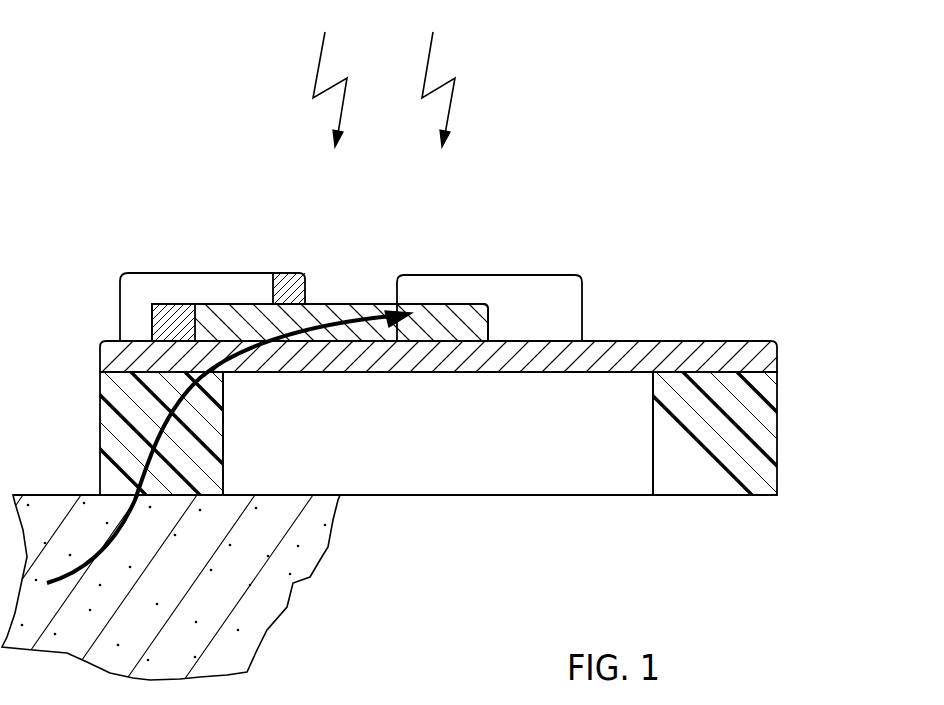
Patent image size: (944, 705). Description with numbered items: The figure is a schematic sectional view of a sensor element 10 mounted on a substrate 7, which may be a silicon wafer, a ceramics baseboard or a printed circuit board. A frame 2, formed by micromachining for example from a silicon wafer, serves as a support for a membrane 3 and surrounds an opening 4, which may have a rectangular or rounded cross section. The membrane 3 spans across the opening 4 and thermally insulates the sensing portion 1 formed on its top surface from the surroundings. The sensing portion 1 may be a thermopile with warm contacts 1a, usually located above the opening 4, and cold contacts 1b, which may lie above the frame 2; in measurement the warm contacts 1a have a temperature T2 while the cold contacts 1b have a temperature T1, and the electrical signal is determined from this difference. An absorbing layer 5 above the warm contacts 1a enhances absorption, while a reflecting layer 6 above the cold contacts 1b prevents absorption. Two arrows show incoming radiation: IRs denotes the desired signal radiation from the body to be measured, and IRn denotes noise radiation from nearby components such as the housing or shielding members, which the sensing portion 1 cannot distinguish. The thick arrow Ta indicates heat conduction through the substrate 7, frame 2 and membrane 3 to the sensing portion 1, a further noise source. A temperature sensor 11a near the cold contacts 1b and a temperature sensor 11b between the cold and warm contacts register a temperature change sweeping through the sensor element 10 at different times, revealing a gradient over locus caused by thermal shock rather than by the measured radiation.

The sensing portion 1 is at (357, 312).
The warm contacts 1a is at (458, 310).
The cold contacts 1b is at (204, 324).
The frame 2 is at (768, 426).
The membrane 3 is at (730, 352).
The opening 4 is at (480, 473).
The absorbing layer 5 is at (582, 303).
The reflecting layer 6 is at (130, 323).
The substrate 7 is at (277, 590).
The sensor element 10 is at (615, 163).
The temperature sensor 11a is at (163, 312).
The temperature sensor 11b is at (290, 277).
The noise radiation IRn is at (332, 73).
The signal radiation IRs is at (440, 73).
The temperature of cold contacts T1 is at (193, 297).
The temperature of warm contacts T2 is at (486, 300).
The heat conduction Ta is at (140, 447).